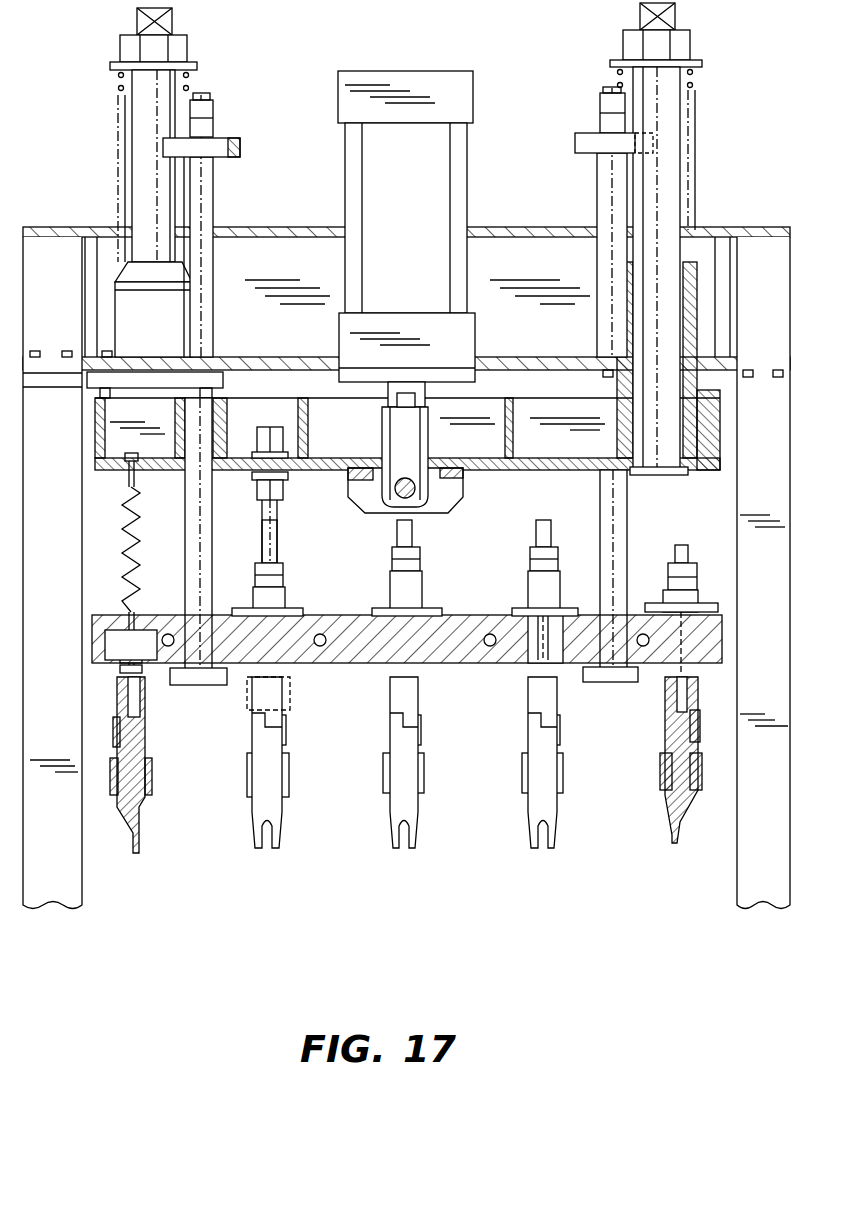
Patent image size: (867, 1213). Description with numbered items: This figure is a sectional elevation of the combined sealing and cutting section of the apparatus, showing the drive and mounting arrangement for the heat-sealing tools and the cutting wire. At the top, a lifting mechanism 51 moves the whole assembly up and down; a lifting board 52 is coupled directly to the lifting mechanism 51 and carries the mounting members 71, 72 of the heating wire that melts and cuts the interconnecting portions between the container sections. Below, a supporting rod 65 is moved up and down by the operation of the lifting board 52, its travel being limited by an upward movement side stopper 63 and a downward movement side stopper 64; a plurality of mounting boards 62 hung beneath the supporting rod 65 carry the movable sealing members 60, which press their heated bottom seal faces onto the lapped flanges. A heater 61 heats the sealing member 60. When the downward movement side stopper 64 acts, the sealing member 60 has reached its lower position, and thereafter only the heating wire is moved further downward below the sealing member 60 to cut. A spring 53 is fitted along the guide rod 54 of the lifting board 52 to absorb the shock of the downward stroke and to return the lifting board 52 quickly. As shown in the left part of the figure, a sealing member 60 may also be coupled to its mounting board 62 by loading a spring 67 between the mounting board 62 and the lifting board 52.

The lifting mechanism 51 is at (420, 197).
The lifting board 52 is at (481, 448).
The spring 53 is at (119, 94).
The guide rod 54 is at (142, 162).
The sealing member 60 is at (133, 813).
The heater 61 is at (133, 760).
The mounting board 62 is at (353, 620).
The upward movement side stopper 63 is at (225, 390).
The downward movement side stopper 64 is at (222, 137).
The supporting rod 65 is at (200, 190).
The spring 67 is at (135, 525).
The mounting member 71 is at (286, 514).
The mounting member 72 is at (290, 710).